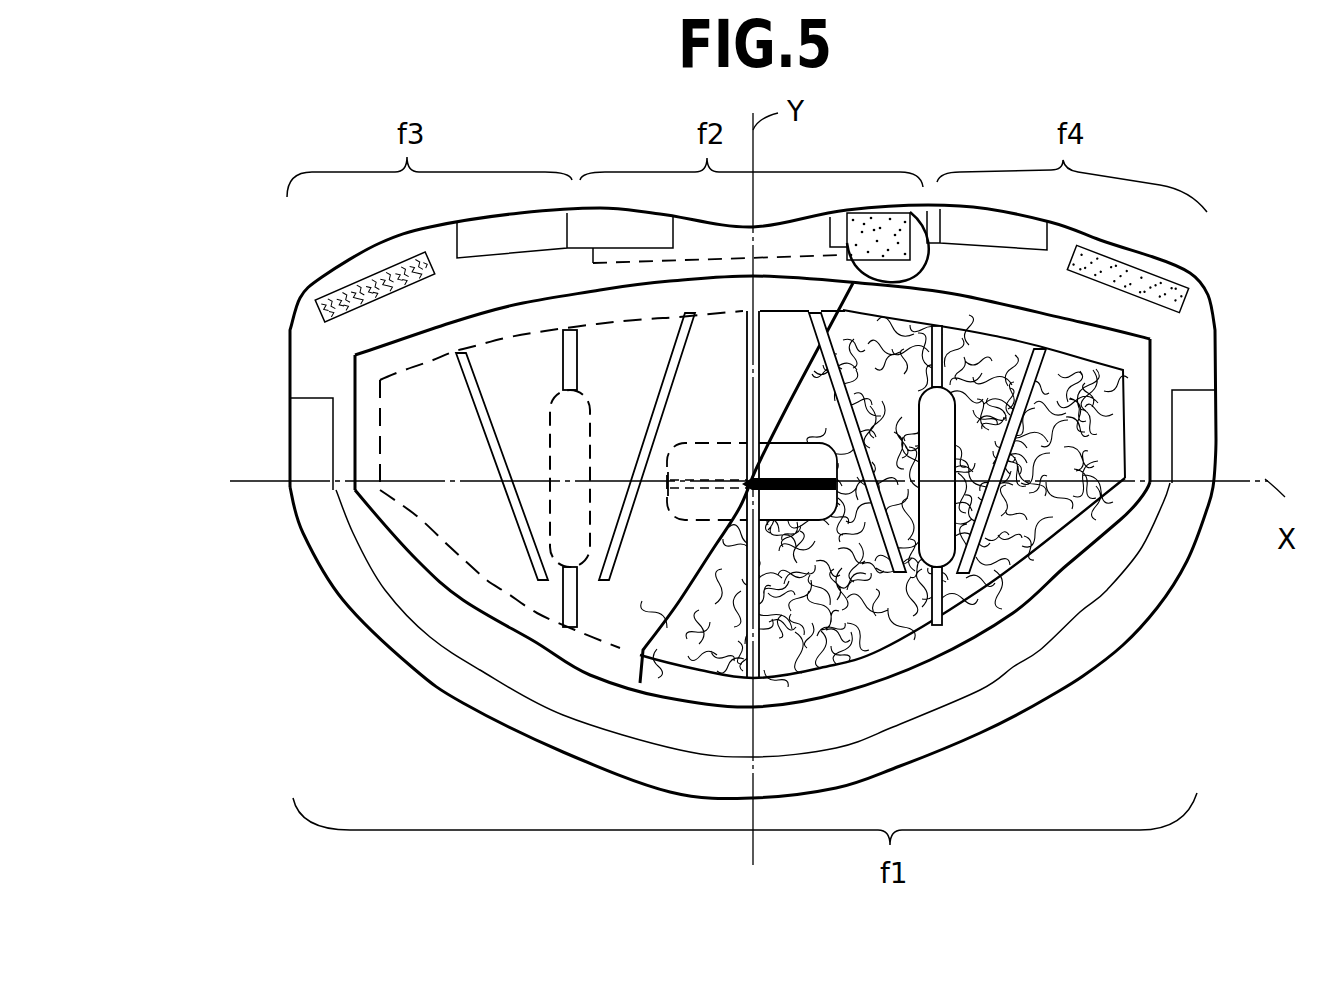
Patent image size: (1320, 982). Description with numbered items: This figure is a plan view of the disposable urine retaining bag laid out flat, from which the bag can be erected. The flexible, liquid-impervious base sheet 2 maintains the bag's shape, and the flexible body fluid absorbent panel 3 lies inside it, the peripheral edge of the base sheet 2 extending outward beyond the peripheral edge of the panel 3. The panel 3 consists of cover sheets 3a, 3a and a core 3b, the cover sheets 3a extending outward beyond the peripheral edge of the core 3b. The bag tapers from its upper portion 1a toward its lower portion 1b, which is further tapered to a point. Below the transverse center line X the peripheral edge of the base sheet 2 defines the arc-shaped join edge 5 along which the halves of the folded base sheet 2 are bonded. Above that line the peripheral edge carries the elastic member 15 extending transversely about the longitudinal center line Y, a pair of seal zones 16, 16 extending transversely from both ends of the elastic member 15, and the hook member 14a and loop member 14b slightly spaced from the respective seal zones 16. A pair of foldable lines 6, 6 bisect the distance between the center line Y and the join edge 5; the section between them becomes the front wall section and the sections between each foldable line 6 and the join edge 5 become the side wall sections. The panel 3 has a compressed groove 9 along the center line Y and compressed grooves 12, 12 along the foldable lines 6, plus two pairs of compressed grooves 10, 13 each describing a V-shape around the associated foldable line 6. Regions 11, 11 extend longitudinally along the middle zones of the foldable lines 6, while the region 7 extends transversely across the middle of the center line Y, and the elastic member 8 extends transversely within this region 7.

The upper portion 1a is at (257, 482).
The lower portion 1b is at (257, 500).
The base sheet 2 is at (1193, 373).
The body fluid absorbent panel 3 is at (1050, 537).
The cover sheets 3a is at (617, 620).
The core 3b is at (853, 620).
The join edge 5 is at (1037, 683).
The foldable lines 6 is at (552, 542).
The region 7 is at (722, 448).
The elastic member 8 is at (780, 487).
The compressed groove 9 is at (740, 660).
The compressed grooves 10 is at (667, 380).
The regions 11 is at (552, 418).
The compressed grooves 12 is at (567, 353).
The compressed grooves 13 is at (467, 385).
The hook member 14a is at (1133, 280).
The loop member 14b is at (377, 287).
The elastic member 15 is at (888, 220).
The seal zones 16 is at (537, 225).